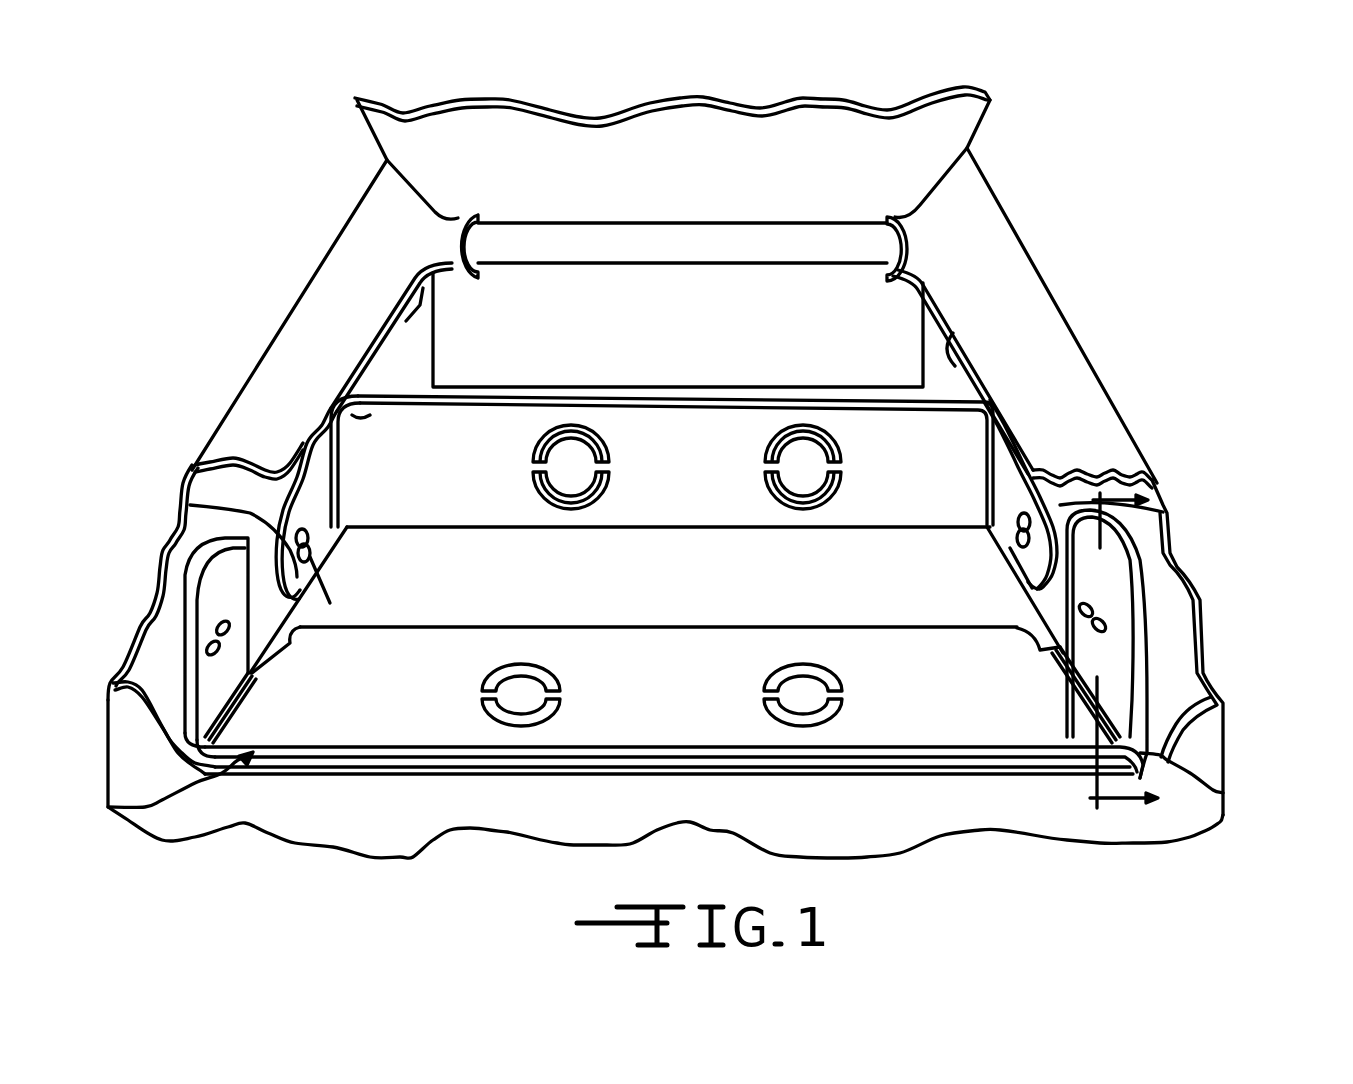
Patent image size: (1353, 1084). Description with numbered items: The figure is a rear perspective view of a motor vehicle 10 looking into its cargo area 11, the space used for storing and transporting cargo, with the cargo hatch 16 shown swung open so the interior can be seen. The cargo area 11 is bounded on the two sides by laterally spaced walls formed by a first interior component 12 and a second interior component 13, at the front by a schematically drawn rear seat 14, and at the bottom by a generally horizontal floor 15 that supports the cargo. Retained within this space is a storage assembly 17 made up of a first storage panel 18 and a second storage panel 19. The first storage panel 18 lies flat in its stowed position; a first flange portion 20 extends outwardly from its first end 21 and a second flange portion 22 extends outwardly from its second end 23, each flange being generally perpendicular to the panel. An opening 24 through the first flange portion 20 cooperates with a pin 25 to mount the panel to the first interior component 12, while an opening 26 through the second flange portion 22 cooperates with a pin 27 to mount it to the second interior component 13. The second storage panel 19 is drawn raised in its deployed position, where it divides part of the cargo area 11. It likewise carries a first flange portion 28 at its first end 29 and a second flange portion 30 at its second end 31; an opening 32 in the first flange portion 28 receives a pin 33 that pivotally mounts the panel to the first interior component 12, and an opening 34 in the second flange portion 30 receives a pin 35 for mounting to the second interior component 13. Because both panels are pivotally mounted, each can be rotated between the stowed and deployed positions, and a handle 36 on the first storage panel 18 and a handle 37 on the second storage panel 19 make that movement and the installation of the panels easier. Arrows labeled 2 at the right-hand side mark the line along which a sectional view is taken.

The motor vehicle 10 is at (1032, 160).
The cargo area 11 is at (973, 383).
The first interior component 12 is at (417, 273).
The second interior component 13 is at (873, 327).
The rear seat 14 is at (923, 312).
The floor 15 is at (190, 503).
The cargo hatch 16 is at (373, 138).
The storage assembly 17 is at (1153, 410).
The first storage panel 18 is at (108, 807).
The second storage panel 19 is at (400, 385).
The first flange portion 20 is at (197, 577).
The first end 21 is at (192, 757).
The second flange portion 22 is at (1135, 585).
The second end 23 is at (1223, 793).
The opening 24 is at (218, 627).
The pin 25 is at (207, 650).
The opening 26 is at (1092, 612).
The pin 27 is at (1104, 633).
The first flange portion 28 is at (327, 473).
The first end 29 is at (330, 400).
The second flange portion 30 is at (1030, 452).
The second end 31 is at (1000, 397).
The opening 32 is at (309, 554).
The pin 33 is at (193, 467).
The opening 34 is at (1010, 550).
The pin 35 is at (1015, 520).
The handle 36 is at (510, 720).
The handle 37 is at (540, 490).
The section line 2 is at (1128, 662).